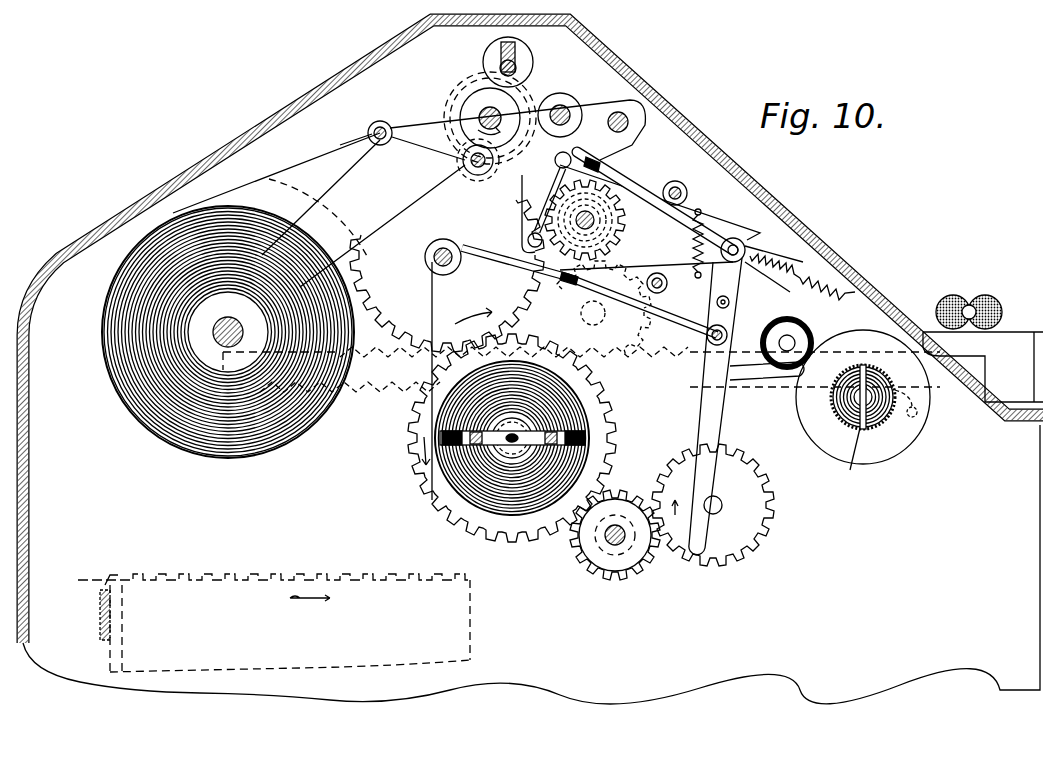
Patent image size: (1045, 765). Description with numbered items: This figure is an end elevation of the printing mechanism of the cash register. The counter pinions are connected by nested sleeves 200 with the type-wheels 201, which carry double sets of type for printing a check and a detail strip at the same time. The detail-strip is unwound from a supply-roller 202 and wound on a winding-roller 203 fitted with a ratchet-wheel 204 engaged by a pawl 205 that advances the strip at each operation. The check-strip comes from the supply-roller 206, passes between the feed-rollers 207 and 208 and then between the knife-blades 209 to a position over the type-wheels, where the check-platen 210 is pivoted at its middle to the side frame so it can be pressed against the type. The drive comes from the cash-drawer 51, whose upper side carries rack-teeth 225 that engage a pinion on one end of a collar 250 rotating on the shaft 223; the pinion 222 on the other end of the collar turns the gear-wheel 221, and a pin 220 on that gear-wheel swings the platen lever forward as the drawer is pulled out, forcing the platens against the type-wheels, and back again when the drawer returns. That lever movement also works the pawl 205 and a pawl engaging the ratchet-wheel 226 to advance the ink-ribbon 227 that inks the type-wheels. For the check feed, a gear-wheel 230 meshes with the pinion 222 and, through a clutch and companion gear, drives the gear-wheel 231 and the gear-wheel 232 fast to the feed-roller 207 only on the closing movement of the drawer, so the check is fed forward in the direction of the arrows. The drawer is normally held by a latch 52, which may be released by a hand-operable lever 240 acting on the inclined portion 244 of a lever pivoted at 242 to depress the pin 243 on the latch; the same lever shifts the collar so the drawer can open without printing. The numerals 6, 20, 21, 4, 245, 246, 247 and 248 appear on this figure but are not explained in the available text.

The feed roller 6 is at (975, 300).
The main gear 20 is at (447, 276).
The rack 21 is at (355, 405).
The frame 4 is at (658, 340).
The cash-drawer 51 is at (510, 622).
The latch 52 is at (112, 575).
The nested sleeves 200 is at (607, 220).
The type-wheels 201 is at (655, 194).
The supply-roller 202 is at (457, 480).
The winding-roller 203 is at (880, 420).
The ratchet-wheel 204 is at (835, 460).
The pawl 205 is at (745, 382).
The supply-roller 206 is at (178, 448).
The feed-roller 207 is at (475, 108).
The feed-roller 208 is at (466, 165).
The knife-blades 209 is at (575, 102).
The check-platen 210 is at (570, 155).
The pin 220 is at (693, 495).
The gear-wheel 221 is at (762, 513).
The pinion 222 is at (635, 578).
The shaft 223 is at (610, 548).
The rack-teeth 225 is at (247, 578).
The ratchet-wheel 226 is at (838, 322).
The ink-ribbon 227 is at (695, 191).
The gear-wheel 230 is at (520, 530).
The gear-wheel 231 is at (426, 263).
The gear-wheel 232 is at (447, 118).
The hand-operable lever 240 is at (678, 294).
The pivot 242 is at (604, 308).
The pin 243 is at (774, 260).
The downwardly-extending portion 244 is at (589, 289).
The pin 245 is at (678, 359).
The lever 246 is at (809, 303).
The spring 247 is at (790, 243).
The spring 248 is at (851, 278).
The collar 250 is at (625, 550).